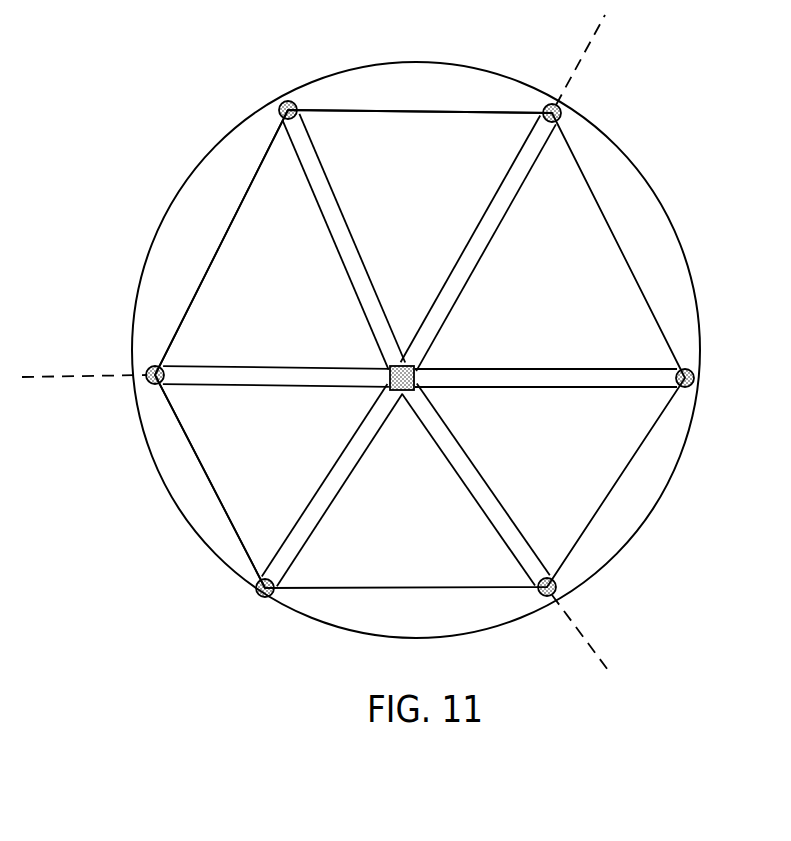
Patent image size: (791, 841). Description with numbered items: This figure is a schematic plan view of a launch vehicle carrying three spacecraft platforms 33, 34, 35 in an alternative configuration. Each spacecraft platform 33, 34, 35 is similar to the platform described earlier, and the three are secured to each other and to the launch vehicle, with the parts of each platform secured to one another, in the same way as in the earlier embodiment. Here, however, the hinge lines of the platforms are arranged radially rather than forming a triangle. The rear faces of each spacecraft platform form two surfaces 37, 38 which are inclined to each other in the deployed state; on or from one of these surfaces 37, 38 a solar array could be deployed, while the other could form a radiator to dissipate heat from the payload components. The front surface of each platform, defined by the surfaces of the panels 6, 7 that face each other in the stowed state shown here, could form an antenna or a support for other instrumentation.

The panel 6 is at (495, 230).
The panel 7 is at (488, 212).
The spacecraft platform 33 is at (157, 332).
The spacecraft platform 34 is at (569, 553).
The spacecraft platform 35 is at (508, 98).
The surface 37 is at (227, 220).
The surface 38 is at (322, 203).